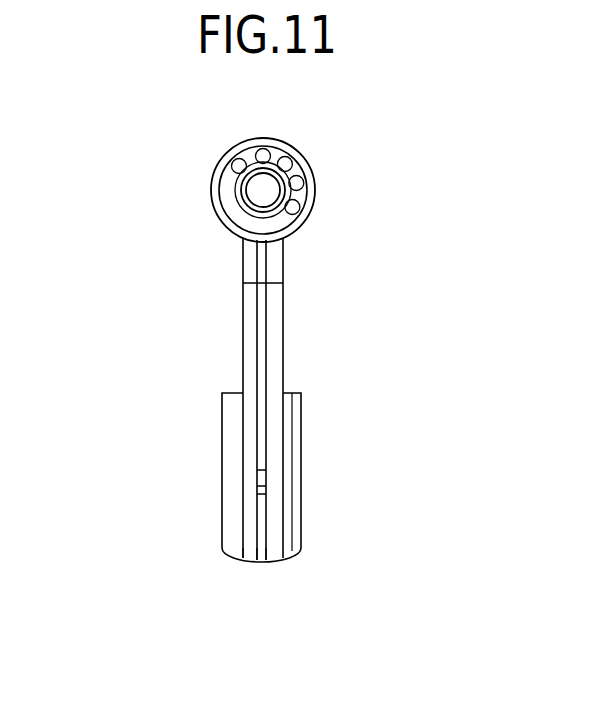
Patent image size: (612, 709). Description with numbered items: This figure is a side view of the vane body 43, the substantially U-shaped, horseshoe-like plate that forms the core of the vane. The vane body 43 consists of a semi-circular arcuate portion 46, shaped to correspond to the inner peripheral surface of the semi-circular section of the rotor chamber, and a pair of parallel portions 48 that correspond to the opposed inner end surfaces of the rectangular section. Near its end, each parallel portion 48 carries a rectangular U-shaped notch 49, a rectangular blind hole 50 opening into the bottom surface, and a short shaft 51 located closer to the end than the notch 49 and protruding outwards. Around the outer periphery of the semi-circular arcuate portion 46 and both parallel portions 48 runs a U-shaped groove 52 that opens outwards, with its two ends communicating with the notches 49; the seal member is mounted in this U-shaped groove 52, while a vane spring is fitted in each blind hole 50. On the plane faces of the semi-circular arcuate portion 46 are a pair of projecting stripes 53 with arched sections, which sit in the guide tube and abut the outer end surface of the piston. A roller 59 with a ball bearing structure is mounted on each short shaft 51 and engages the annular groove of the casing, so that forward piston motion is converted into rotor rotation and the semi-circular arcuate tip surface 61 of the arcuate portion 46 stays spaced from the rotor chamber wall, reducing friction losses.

The vane body 43 is at (237, 399).
The semi-circular arcuate portion 46 is at (241, 499).
The parallel portion 48 is at (243, 308).
The rectangular U-shaped notch 49 is at (234, 269).
The rectangular blind hole 50 is at (265, 267).
The short shaft 51 is at (253, 190).
The U-shaped groove 52 is at (258, 562).
The projecting stripe 53 is at (222, 444).
The roller 59 is at (297, 163).
The semi-circular arcuate tip surface 61 is at (247, 562).